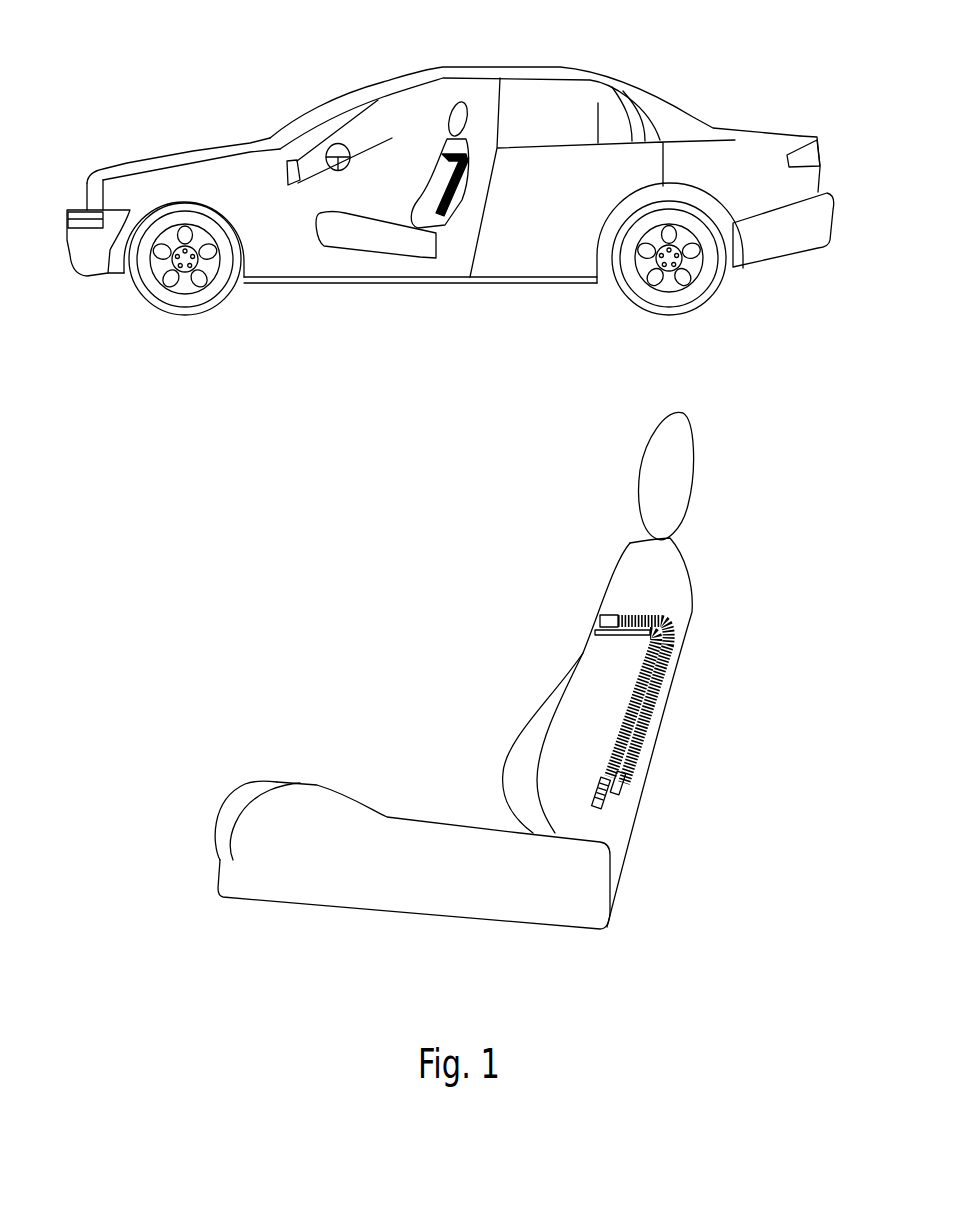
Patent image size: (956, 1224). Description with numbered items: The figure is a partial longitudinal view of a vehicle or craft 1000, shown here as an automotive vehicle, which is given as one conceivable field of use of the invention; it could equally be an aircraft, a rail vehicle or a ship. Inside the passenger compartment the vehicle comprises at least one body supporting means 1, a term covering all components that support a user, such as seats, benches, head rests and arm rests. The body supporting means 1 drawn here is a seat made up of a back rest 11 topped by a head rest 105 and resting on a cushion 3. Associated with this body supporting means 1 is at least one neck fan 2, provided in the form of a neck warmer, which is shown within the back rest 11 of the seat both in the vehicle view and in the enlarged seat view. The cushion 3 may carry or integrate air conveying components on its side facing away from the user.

The body supporting means 1 is at (454, 468).
The back rest 11 is at (418, 180).
The head rest 105 is at (476, 114).
The vehicle or craft 1000 is at (562, 135).
The neck fan 2 is at (470, 196).
The cushion 3 is at (446, 234).